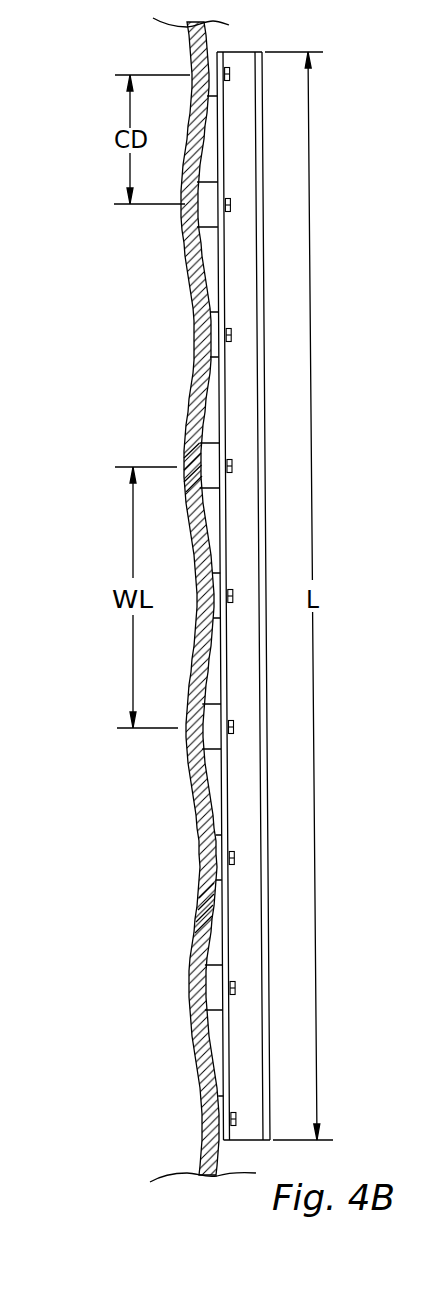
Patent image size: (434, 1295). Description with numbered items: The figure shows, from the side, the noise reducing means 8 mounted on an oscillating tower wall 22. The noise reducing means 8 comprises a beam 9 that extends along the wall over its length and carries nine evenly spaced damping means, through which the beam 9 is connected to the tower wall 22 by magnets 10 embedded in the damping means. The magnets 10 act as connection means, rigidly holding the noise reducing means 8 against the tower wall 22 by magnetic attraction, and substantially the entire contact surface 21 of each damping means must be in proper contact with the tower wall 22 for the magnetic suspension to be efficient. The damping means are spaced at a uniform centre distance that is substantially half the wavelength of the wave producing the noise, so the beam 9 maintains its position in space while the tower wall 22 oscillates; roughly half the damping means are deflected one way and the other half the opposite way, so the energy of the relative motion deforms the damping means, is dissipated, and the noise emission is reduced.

The noise reducing means 8 is at (118, 258).
The beam 9 is at (247, 318).
The magnets 10 is at (212, 335).
The contact surface 21 is at (197, 471).
The tower wall 22 is at (203, 905).